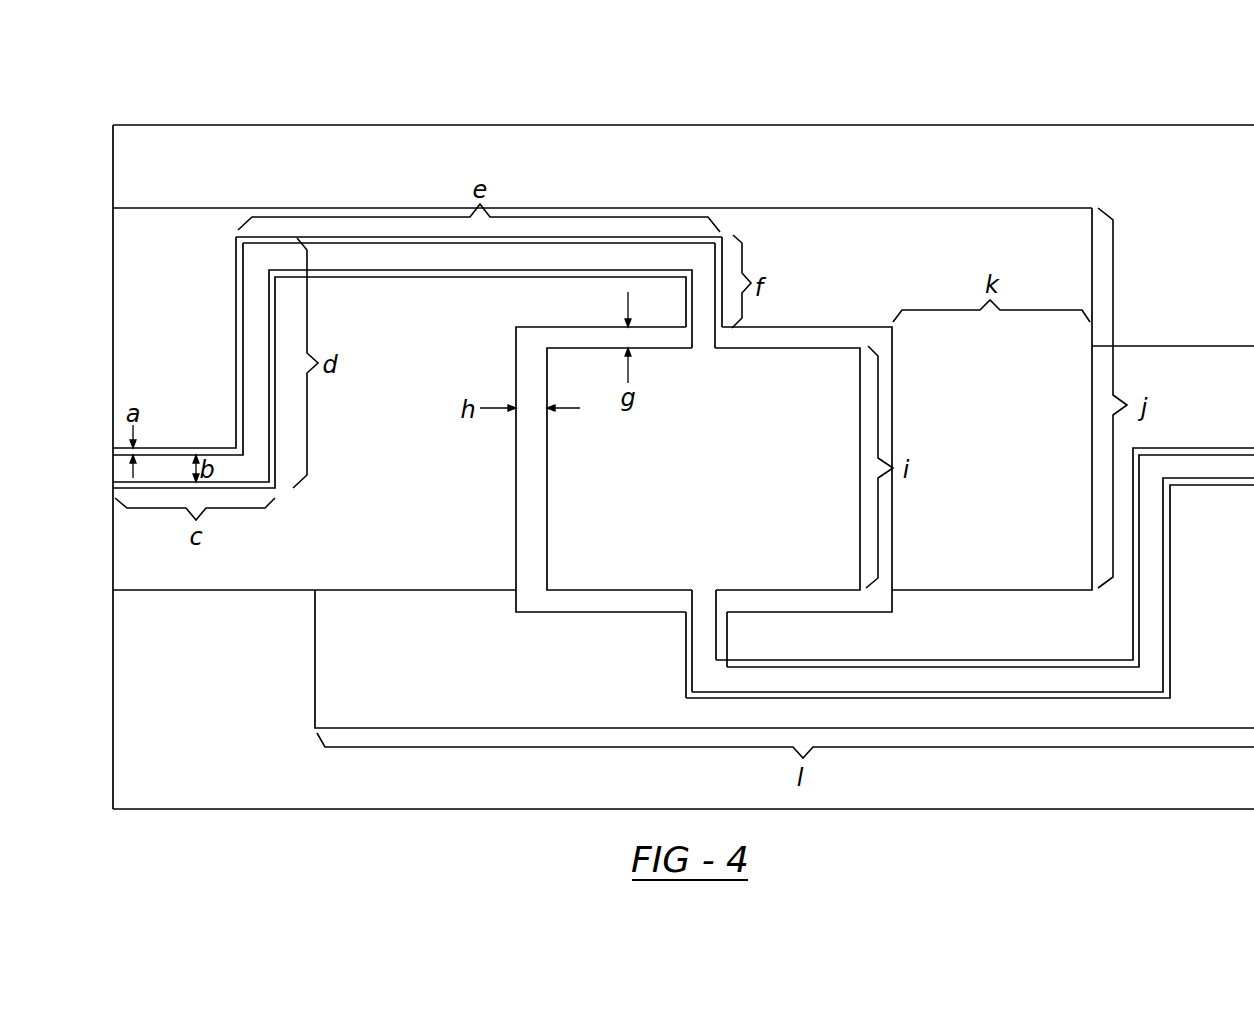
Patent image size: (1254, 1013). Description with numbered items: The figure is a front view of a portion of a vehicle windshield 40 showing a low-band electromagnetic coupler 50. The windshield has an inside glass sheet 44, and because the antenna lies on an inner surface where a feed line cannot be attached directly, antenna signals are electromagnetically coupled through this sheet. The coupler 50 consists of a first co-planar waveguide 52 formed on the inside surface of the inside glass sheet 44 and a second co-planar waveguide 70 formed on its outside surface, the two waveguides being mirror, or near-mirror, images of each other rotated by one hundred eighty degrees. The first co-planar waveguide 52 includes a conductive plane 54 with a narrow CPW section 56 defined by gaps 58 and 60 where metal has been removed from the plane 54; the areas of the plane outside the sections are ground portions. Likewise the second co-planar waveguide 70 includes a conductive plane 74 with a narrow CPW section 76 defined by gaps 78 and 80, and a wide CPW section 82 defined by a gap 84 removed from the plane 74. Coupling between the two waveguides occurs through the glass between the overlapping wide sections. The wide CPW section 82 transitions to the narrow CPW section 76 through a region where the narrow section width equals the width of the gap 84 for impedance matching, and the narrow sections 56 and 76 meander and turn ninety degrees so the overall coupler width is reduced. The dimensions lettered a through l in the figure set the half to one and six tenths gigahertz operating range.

The vehicle windshield 40 is at (968, 73).
The inside glass sheet 44 is at (1102, 157).
The electromagnetic coupler 50 is at (673, 177).
The first co-planar waveguide 52 is at (980, 768).
The conductive plane 54 is at (343, 657).
The narrow CPW section 56 is at (1018, 678).
The gap 58 is at (918, 660).
The gap 60 is at (700, 697).
The second co-planar waveguide 70 is at (335, 172).
The conductive plane 74 is at (133, 558).
The narrow CPW section 76 is at (523, 256).
The gap 78 is at (370, 242).
The gap 80 is at (415, 272).
The wide CPW section 82 is at (769, 370).
The gap 84 is at (532, 507).